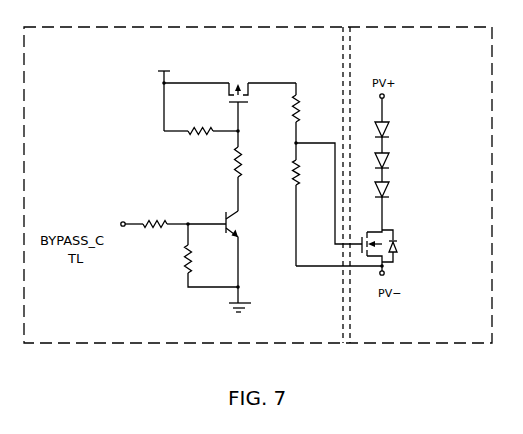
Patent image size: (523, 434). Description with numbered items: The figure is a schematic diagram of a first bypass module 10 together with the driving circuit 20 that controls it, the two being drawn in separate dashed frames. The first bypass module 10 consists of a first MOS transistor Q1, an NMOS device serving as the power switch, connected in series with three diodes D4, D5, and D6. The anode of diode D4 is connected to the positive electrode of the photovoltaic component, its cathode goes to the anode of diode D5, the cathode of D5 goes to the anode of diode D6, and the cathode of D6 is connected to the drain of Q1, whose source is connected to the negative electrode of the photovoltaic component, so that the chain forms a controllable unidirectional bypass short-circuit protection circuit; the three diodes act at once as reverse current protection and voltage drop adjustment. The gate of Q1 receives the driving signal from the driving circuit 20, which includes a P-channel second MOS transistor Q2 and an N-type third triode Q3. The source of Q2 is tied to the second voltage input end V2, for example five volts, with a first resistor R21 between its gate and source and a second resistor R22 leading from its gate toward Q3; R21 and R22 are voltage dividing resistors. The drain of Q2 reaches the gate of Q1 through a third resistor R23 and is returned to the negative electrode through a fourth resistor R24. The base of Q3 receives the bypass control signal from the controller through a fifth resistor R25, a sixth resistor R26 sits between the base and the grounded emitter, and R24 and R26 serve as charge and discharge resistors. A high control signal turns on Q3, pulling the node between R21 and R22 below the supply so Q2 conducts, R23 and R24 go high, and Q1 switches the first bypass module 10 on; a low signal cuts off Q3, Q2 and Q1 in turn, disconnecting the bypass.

The first bypass module 10 is at (412, 185).
The driving circuit 20 is at (186, 197).
The first MOS transistor Q1 is at (395, 249).
The second MOS transistor Q2 is at (243, 94).
The third triode Q3 is at (234, 249).
The first resistor R21 is at (202, 120).
The second resistor R22 is at (217, 171).
The third resistor R23 is at (279, 121).
The fourth resistor R24 is at (280, 213).
The fifth resistor R25 is at (155, 216).
The sixth resistor R26 is at (212, 256).
The diode D4 is at (400, 137).
The diode D5 is at (400, 167).
The diode D6 is at (400, 206).
The second voltage input end V2 is at (166, 91).